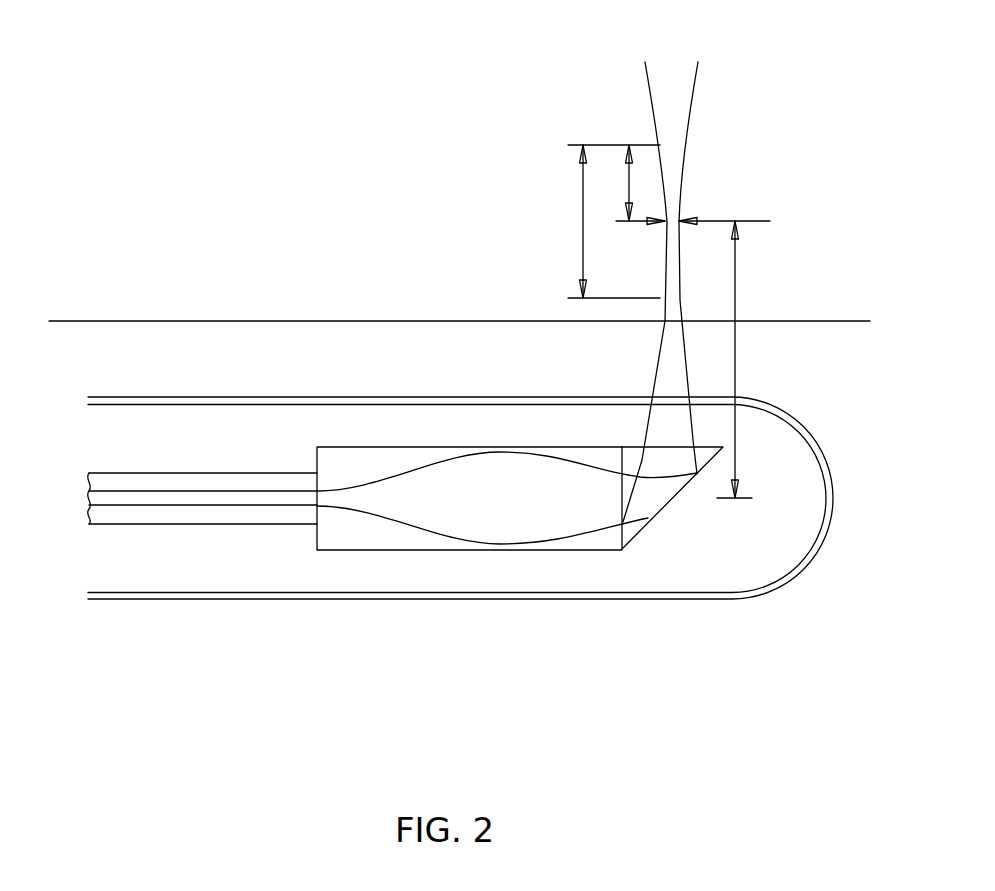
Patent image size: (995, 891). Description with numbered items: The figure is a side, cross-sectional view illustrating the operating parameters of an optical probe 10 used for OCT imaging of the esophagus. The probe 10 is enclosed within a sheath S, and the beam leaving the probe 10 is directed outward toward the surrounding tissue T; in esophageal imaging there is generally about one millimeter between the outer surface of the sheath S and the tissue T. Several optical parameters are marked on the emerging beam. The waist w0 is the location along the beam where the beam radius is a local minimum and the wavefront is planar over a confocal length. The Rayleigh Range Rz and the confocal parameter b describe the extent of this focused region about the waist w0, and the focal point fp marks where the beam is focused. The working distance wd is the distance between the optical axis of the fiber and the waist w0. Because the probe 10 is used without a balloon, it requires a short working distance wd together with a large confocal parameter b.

The optical probe 10 is at (218, 565).
The tissue T is at (71, 321).
The sheath S is at (780, 408).
The confocal parameter b is at (611, 221).
The Rayleigh Range Rz is at (614, 183).
The waist w0 is at (672, 218).
The focal point fp is at (737, 220).
The working distance wd is at (748, 359).